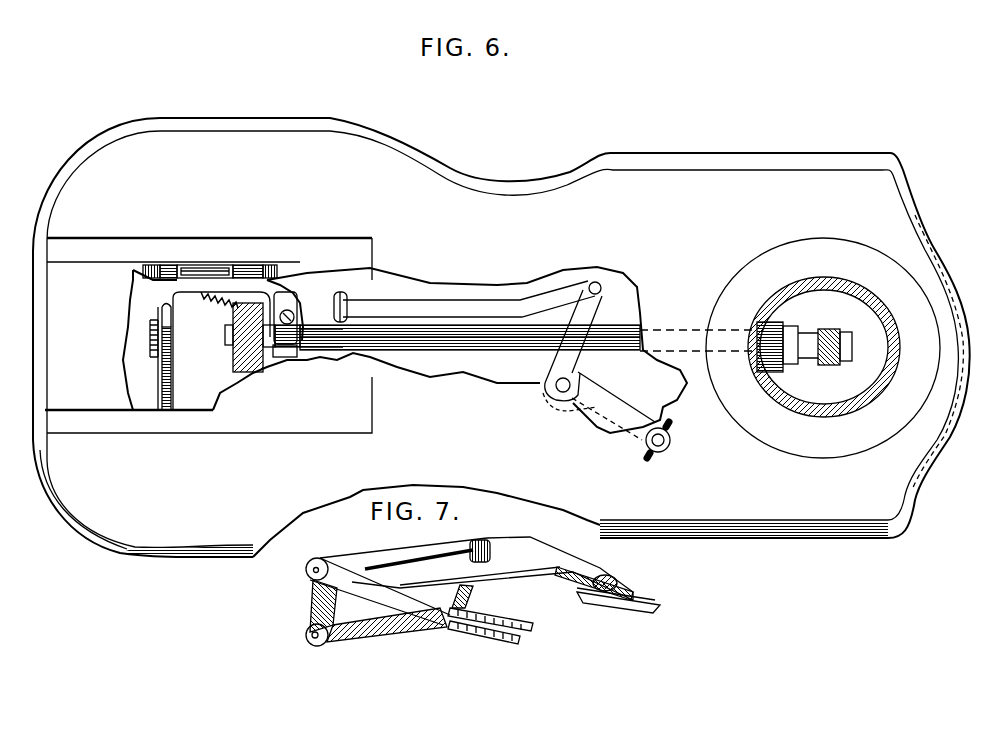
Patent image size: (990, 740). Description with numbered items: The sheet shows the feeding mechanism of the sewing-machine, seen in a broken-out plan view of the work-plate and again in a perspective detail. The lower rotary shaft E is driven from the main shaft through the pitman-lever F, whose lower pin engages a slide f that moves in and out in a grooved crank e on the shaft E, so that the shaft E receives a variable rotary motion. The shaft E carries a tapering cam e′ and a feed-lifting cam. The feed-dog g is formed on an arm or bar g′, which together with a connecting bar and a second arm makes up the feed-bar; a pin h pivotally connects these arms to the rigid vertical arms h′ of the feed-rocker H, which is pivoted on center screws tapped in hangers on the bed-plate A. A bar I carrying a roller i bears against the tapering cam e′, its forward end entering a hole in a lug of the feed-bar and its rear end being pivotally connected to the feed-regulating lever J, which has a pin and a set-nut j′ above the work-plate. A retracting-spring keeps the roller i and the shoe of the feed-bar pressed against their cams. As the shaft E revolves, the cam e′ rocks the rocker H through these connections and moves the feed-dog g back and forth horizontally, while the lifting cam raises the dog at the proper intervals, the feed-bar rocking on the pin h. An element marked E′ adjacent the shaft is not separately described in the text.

In FIG. 6, the bed-plate A is at (253, 335).
In FIG. 6, the feed-rocker H is at (192, 266).
In FIG. 7, the feed-rocker H is at (410, 632).
In FIG. 6, the pin h is at (215, 268).
In FIG. 7, the pin h is at (384, 563).
In FIG. 6, the rigid vertical arms h′ is at (170, 268).
In FIG. 7, the rigid vertical arms h′ is at (312, 628).
In FIG. 6, the feed-dog g is at (150, 345).
In FIG. 7, the feed-dog g is at (497, 632).
In FIG. 6, the arm or bar g′ is at (158, 305).
In FIG. 7, the arm or bar g′ is at (390, 595).
In FIG. 6, the roller i is at (345, 302).
In FIG. 6, the bar I is at (443, 306).
In FIG. 6, the lower rotary shaft E is at (443, 340).
In FIG. 6, the solenoid / block E′ is at (230, 342).
In FIG. 6, the grooved crank e is at (802, 335).
In FIG. 6, the tapering cam e′ is at (357, 353).
In FIG. 6, the slide f is at (822, 338).
In FIG. 6, the pitman-lever F is at (832, 342).
In FIG. 6, the feed-regulating lever J is at (577, 357).
In FIG. 6, the set-nut j′ is at (675, 455).